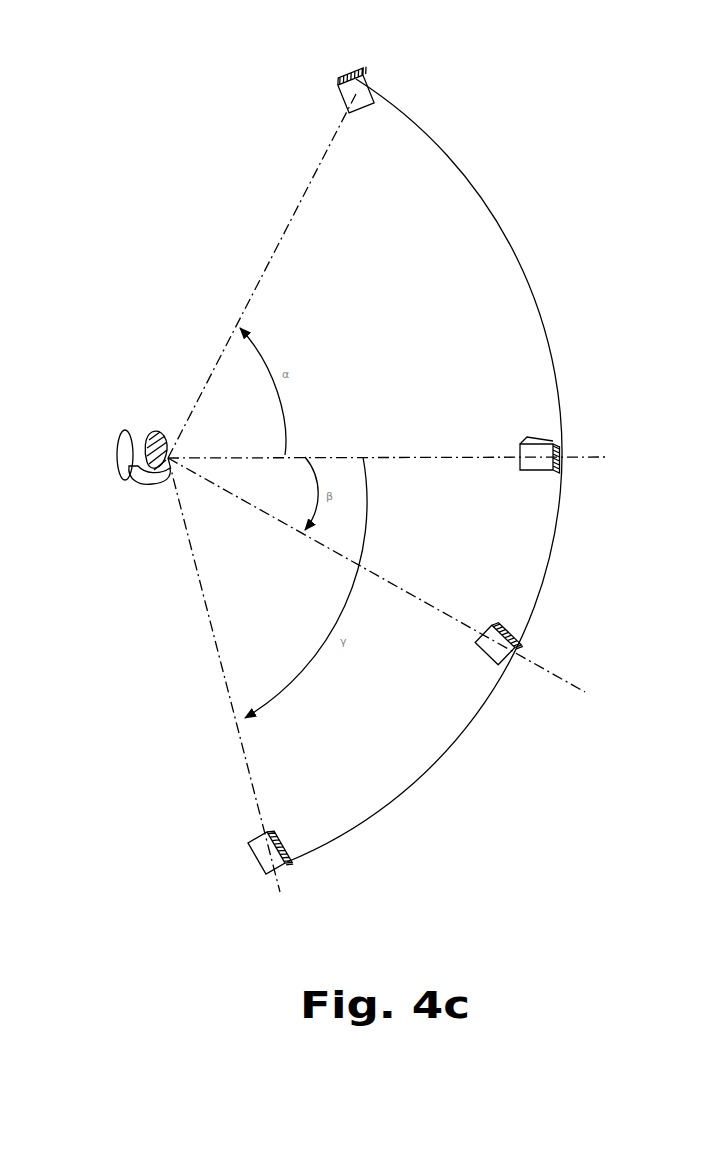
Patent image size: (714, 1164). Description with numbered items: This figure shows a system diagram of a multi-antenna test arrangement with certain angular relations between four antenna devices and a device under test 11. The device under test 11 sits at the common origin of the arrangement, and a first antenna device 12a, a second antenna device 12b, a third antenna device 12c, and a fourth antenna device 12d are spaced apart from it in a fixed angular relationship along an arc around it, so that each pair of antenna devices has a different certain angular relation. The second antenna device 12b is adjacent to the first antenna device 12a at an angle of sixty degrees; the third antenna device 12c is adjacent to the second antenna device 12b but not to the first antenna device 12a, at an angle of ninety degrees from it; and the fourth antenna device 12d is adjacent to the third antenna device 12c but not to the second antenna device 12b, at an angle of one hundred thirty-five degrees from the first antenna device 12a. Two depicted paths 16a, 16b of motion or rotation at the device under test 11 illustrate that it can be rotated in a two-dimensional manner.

The device under test 11 is at (150, 432).
The first antenna device 12a is at (352, 80).
The second antenna device 12b is at (530, 440).
The third antenna device 12c is at (490, 625).
The fourth antenna device 12d is at (248, 845).
The path of motion or rotation 16a is at (118, 446).
The path of motion or rotation 16b is at (144, 486).